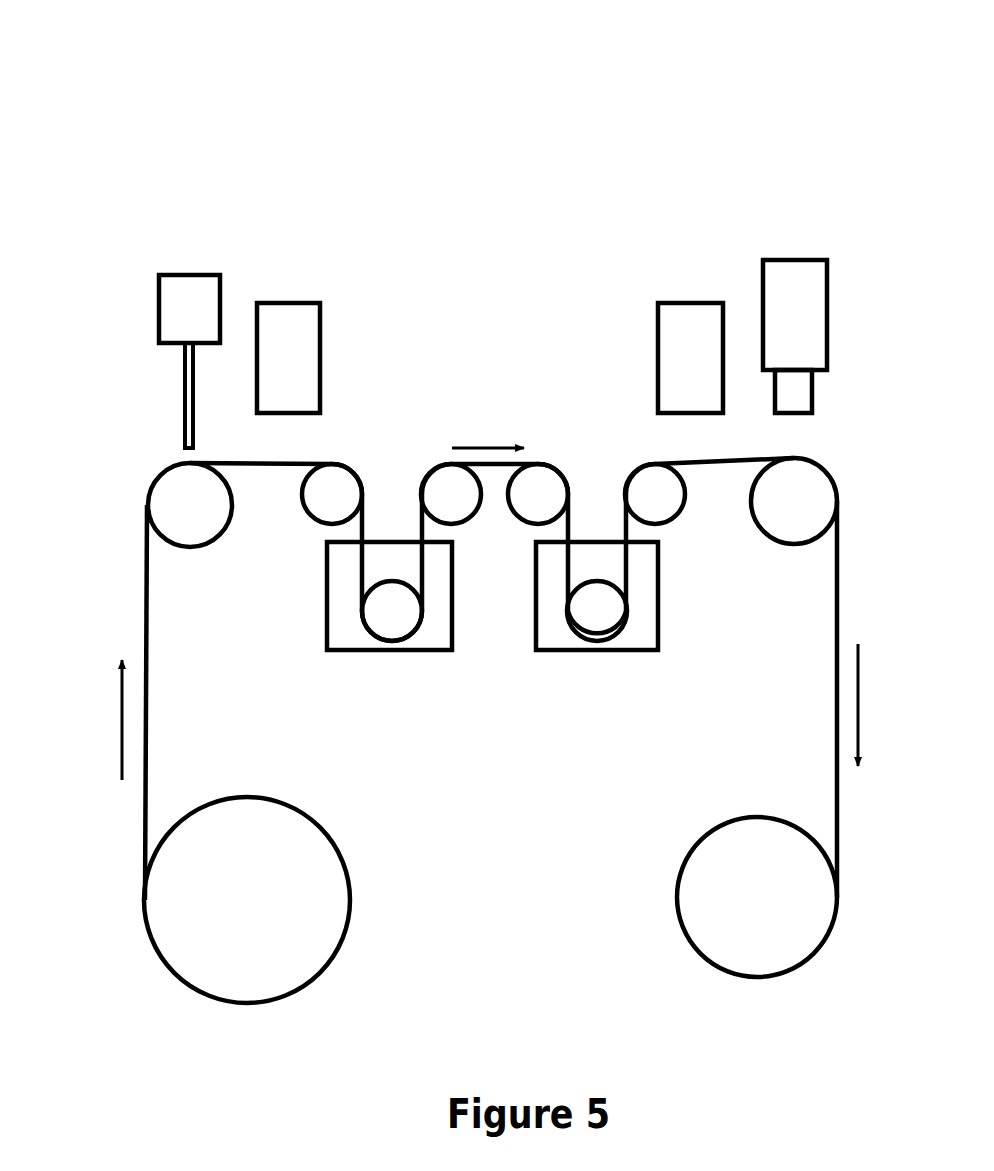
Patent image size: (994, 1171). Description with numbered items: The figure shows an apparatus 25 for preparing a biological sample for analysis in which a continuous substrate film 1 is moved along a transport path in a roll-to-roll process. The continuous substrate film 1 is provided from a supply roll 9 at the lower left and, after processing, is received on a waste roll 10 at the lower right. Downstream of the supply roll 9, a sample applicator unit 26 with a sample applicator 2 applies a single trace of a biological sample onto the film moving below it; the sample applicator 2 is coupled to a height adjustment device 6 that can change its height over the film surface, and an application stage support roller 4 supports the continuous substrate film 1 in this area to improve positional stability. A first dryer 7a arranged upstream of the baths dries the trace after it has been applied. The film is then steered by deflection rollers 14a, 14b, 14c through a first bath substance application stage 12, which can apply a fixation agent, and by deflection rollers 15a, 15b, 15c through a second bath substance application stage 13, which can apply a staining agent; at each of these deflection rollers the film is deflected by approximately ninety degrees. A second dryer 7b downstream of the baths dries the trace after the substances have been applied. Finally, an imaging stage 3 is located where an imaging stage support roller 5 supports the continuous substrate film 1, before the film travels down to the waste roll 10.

The continuous substrate film 1 is at (163, 765).
The sample applicator 2 is at (165, 411).
The imaging stage 3 is at (797, 333).
The application stage support roller 4 is at (190, 498).
The imaging stage support roller 5 is at (790, 515).
The height adjustment device 6 is at (185, 305).
The first dryer 7a is at (290, 353).
The second dryer 7b is at (688, 338).
The supply roll 9 is at (248, 903).
The waste roll 10 is at (752, 905).
The first bath substance application stage 12 is at (442, 630).
The second bath substance application stage 13 is at (642, 630).
The deflection roller 14a is at (335, 497).
The deflection roller 14b is at (392, 610).
The deflection roller 14c is at (455, 490).
The deflection roller 15a is at (543, 490).
The deflection roller 15b is at (597, 613).
The deflection roller 15c is at (653, 492).
The apparatus 25 is at (500, 190).
The sample applicator unit 26 is at (183, 279).